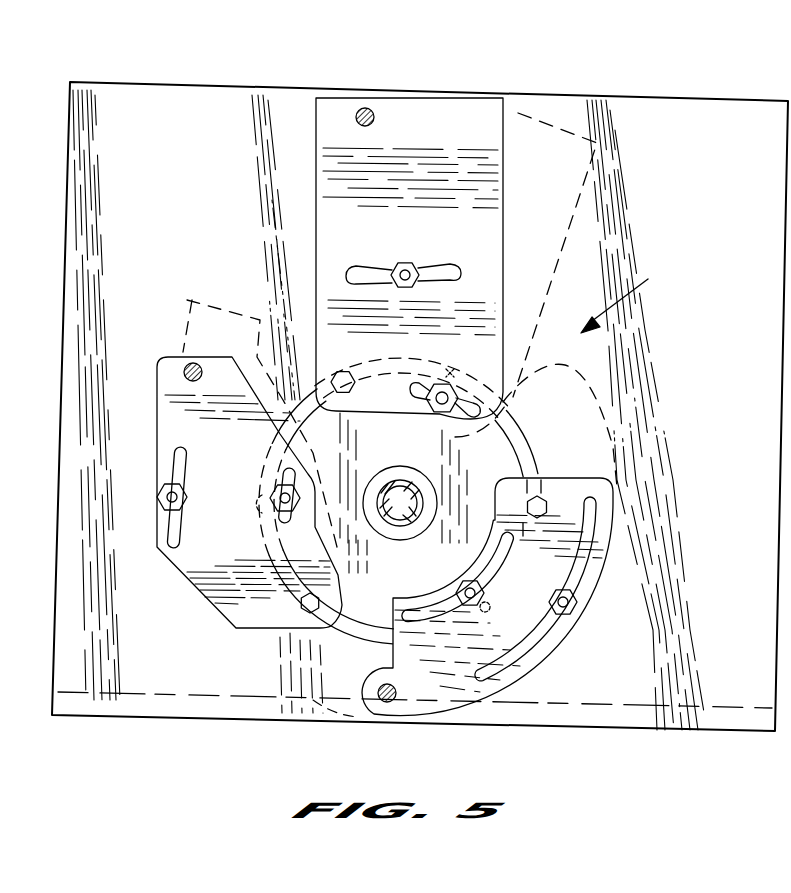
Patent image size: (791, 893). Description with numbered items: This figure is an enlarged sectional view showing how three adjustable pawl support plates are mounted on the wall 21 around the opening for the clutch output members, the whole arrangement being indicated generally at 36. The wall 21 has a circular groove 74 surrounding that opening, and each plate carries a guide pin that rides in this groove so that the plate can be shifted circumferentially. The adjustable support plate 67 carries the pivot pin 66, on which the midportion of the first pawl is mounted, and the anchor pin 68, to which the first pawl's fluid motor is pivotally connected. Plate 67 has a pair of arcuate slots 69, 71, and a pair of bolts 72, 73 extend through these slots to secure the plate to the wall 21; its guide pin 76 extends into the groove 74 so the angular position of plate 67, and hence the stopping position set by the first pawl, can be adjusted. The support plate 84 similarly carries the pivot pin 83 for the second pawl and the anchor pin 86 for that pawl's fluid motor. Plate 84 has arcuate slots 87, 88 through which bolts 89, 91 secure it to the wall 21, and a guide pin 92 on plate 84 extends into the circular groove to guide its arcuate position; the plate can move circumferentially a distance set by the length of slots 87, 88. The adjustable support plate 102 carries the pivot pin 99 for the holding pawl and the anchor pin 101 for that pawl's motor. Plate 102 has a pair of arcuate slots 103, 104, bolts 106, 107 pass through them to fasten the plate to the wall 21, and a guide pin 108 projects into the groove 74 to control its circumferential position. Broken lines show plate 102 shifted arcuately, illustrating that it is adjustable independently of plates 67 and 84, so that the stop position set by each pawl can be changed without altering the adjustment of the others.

The wall 21 is at (740, 100).
The mounting assembly 36 is at (632, 297).
The pivot pin 66 is at (542, 507).
The adjustable support plate 67 is at (605, 390).
The anchor pin 68 is at (388, 702).
The arcuate slot 69 is at (505, 562).
The arcuate slot 71 is at (527, 650).
The bolt 72 is at (470, 607).
The bolt 73 is at (576, 604).
The circular groove 74 is at (527, 447).
The guide pin 76 is at (490, 611).
The pivot pin 83 is at (306, 612).
The support plate 84 is at (183, 299).
The anchor pin 86 is at (191, 364).
The arcuate slot 87 is at (171, 460).
The arcuate slot 88 is at (275, 474).
The bolt 89 is at (165, 504).
The bolt 91 is at (268, 492).
The guide pin 92 is at (260, 512).
The pivot pin 99 is at (351, 377).
The anchor pin 101 is at (370, 108).
The adjustable support plate 102 is at (480, 167).
The arcuate slot 103 is at (441, 267).
The arcuate slot 104 is at (456, 398).
The bolt 106 is at (397, 264).
The bolt 107 is at (430, 413).
The guide pin 108 is at (449, 368).